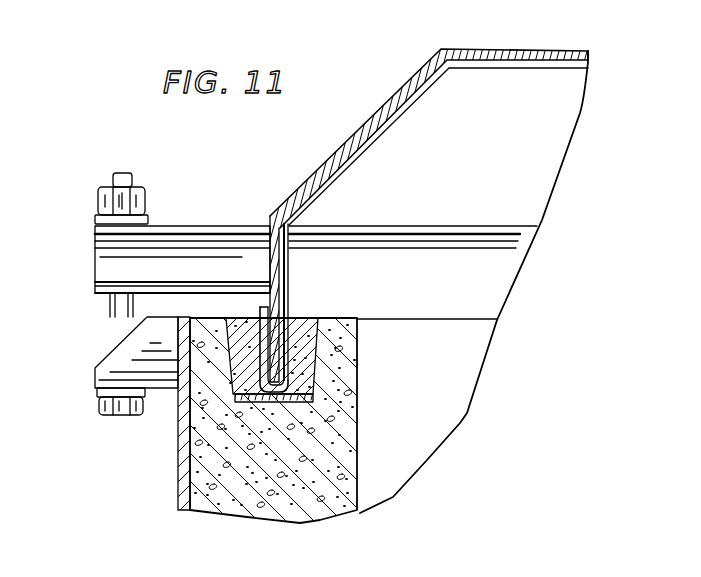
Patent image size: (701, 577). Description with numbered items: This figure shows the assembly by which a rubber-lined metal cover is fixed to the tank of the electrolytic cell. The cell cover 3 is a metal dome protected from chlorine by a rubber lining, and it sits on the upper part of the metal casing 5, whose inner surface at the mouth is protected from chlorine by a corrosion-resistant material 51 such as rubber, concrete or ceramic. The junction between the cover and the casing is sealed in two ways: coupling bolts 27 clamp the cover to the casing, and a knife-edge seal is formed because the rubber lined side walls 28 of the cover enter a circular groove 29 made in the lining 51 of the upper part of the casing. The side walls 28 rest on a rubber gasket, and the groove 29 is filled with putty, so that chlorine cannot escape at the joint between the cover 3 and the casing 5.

The cell cover 3 is at (331, 160).
The coupling bolts 27 is at (100, 197).
The circular groove 29 is at (272, 362).
The rubber lined side walls 28 is at (318, 366).
The corrosion-resistant material 51 is at (359, 456).
The metal casing 5 is at (178, 461).